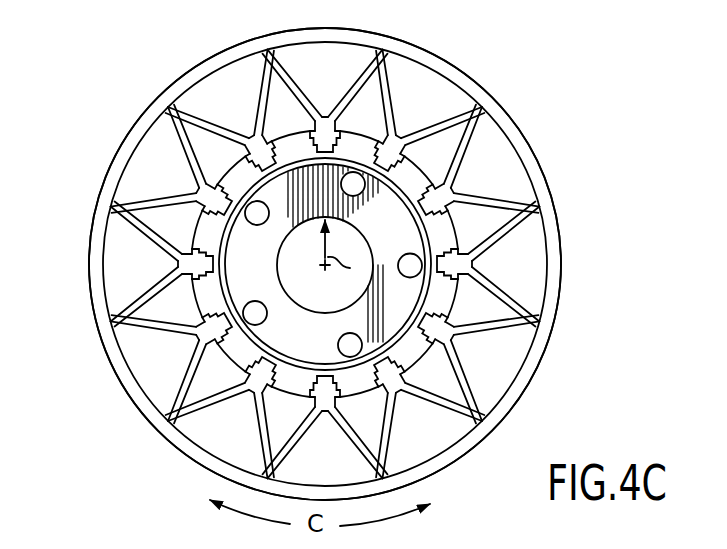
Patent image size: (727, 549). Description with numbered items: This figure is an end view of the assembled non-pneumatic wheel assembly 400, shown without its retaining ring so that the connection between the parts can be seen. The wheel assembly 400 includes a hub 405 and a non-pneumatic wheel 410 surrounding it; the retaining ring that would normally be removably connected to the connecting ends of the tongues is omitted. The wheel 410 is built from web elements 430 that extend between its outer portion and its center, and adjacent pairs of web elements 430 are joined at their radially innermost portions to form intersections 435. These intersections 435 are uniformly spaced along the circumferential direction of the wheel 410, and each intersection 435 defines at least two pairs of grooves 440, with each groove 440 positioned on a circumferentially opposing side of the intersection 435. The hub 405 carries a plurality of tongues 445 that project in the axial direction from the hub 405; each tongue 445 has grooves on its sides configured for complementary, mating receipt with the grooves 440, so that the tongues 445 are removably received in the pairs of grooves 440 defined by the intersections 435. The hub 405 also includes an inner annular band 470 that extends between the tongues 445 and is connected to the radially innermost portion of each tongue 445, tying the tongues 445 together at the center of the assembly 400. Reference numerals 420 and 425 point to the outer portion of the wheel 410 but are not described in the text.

The non-pneumatic wheel assembly 400 is at (577, 112).
The hub 405 is at (277, 193).
The non-pneumatic wheel 410 is at (128, 103).
The outer ring inner surface 420 is at (563, 277).
The outer ring outer surface 425 is at (552, 360).
The web elements 430 is at (393, 97).
The intersections 435 is at (447, 193).
The grooves 440 is at (428, 184).
The tongues 445 is at (291, 136).
The inner annular band 470 is at (437, 330).